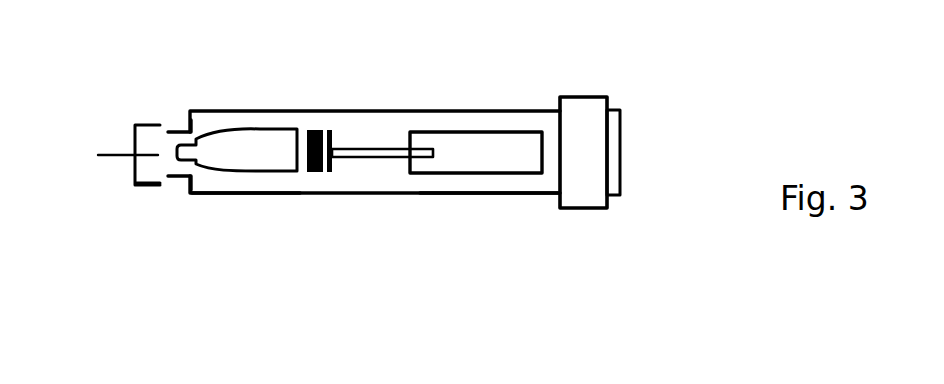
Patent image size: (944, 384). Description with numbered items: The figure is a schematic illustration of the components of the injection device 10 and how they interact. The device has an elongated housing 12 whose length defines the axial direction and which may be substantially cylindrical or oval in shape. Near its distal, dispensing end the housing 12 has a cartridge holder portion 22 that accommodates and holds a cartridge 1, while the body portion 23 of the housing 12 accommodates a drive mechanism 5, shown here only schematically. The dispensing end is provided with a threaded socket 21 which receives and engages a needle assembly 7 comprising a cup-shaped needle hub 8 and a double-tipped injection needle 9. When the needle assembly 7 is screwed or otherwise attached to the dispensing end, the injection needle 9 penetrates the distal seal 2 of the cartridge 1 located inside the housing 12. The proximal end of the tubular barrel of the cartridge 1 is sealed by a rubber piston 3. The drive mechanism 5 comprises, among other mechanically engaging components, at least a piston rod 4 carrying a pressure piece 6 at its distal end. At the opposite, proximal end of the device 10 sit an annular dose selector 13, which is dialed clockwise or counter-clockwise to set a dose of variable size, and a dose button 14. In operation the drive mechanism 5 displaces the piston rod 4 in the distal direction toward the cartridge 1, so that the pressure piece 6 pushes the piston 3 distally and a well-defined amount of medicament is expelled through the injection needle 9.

The cartridge 1 is at (253, 177).
The distal seal 2 is at (197, 130).
The rubber piston 3 is at (315, 173).
The piston rod 4 is at (380, 158).
The drive mechanism 5 is at (460, 165).
The pressure piece 6 is at (332, 138).
The needle assembly 7 is at (145, 98).
The needle hub 8 is at (142, 187).
The injection needle 9 is at (117, 155).
The injection device 10 is at (349, 73).
The housing 12 is at (465, 110).
The dose selector 13 is at (577, 185).
The dose button 14 is at (620, 124).
The threaded socket 21 is at (178, 178).
The cartridge holder portion 22 is at (218, 195).
The body portion 23 is at (523, 194).